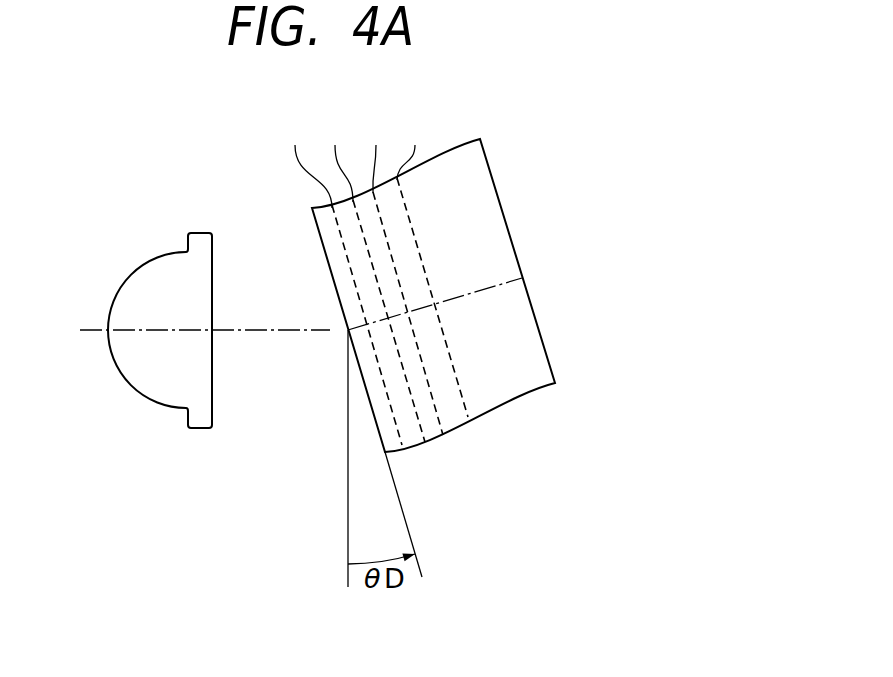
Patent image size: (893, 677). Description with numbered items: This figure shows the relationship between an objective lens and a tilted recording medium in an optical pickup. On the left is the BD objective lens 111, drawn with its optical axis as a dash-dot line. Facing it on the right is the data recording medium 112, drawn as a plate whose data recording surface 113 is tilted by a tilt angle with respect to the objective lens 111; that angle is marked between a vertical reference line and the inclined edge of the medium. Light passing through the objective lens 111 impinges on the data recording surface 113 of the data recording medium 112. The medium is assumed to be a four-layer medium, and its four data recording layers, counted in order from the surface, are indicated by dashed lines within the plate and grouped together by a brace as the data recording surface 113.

The BD objective lens 111 is at (152, 392).
The data recording medium 112 is at (440, 438).
The data recording surface 113 is at (438, 113).